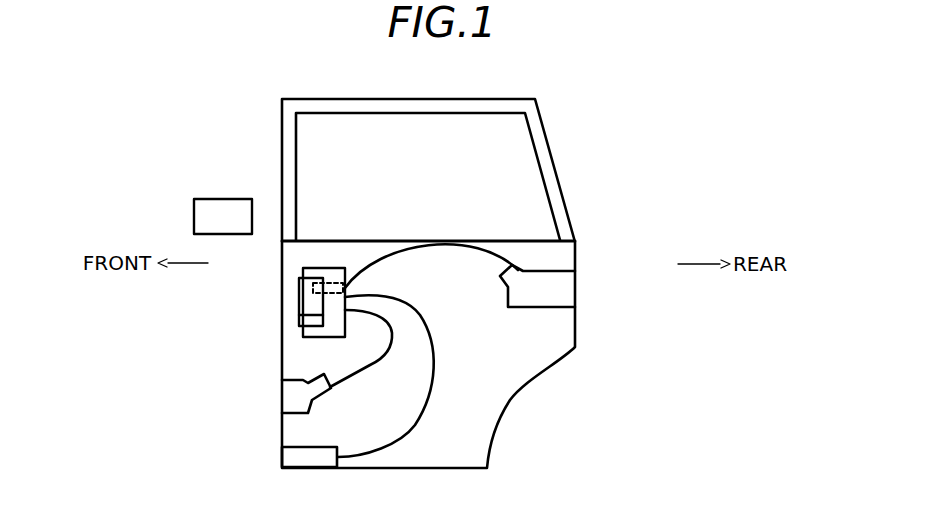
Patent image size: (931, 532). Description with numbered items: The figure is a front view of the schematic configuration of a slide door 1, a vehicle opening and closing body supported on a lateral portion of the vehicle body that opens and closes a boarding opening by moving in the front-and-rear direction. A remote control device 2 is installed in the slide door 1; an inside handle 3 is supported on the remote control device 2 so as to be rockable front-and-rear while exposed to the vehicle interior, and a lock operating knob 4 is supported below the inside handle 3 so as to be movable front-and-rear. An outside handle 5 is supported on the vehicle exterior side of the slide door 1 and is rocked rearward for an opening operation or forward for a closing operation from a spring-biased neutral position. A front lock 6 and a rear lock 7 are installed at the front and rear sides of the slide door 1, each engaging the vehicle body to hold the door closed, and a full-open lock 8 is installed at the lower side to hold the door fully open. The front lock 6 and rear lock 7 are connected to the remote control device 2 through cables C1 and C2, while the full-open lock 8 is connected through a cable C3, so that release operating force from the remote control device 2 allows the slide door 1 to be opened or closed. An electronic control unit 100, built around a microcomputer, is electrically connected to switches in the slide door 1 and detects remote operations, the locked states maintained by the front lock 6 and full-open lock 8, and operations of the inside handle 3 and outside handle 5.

The slide door 1 is at (560, 126).
The remote control device 2 is at (297, 260).
The inside handle 3 is at (300, 300).
The lock operating knob 4 is at (307, 320).
The outside handle 5 is at (332, 283).
The front lock 6 is at (274, 403).
The rear lock 7 is at (584, 282).
The full-open lock 8 is at (315, 479).
The electronic control unit (ECU) 100 is at (213, 198).
The cable C1 is at (353, 372).
The cable C2 is at (458, 243).
The cable C3 is at (432, 350).